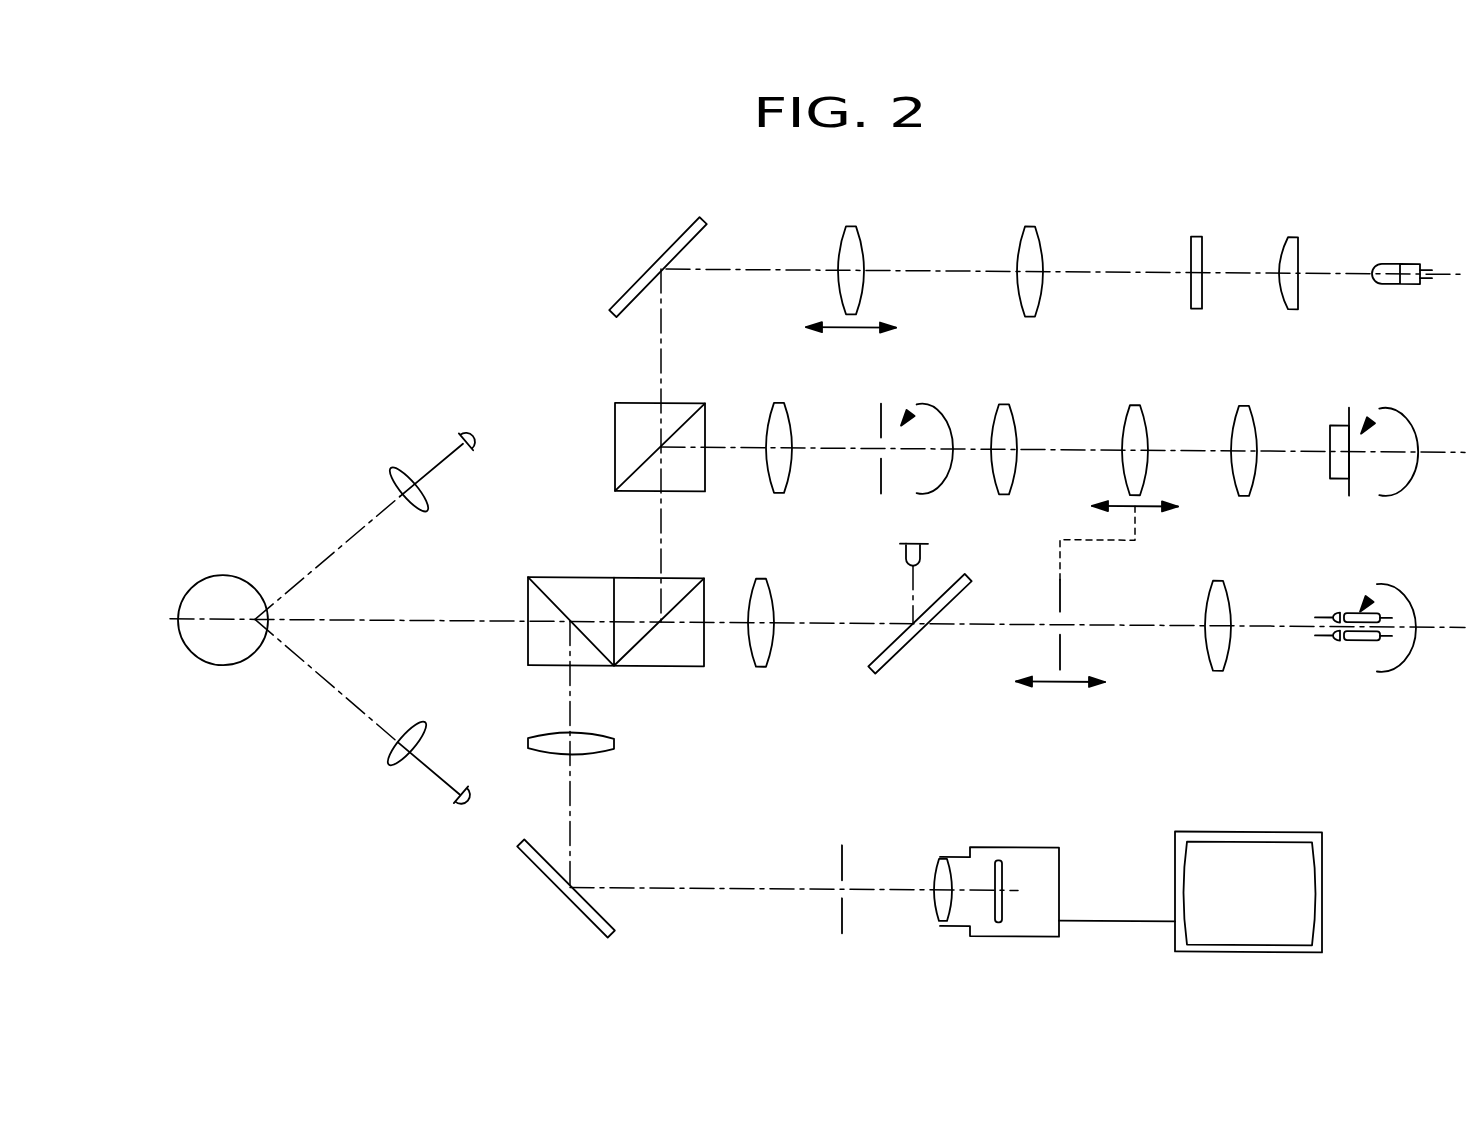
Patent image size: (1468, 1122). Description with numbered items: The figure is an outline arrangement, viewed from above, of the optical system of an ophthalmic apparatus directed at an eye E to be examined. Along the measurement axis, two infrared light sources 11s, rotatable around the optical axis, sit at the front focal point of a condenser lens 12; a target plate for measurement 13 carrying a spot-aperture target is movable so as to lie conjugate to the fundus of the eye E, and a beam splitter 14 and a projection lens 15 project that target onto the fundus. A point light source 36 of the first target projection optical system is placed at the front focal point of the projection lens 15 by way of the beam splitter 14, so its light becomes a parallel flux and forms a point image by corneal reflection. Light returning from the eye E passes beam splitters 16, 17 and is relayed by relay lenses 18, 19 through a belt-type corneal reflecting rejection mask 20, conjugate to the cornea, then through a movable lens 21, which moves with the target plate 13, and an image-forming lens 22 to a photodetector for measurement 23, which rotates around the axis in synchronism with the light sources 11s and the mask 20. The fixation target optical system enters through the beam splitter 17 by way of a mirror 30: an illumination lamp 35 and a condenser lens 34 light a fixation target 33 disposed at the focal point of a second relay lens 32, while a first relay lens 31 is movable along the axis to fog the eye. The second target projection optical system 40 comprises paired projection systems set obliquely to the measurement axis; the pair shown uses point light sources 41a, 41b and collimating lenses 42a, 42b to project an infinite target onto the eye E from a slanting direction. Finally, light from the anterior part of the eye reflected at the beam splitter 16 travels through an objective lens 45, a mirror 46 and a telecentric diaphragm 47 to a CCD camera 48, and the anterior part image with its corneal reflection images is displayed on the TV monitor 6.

The mirror 30 is at (668, 253).
The first relay lens 31 is at (853, 238).
The second relay lens 32 is at (1030, 245).
The fixation target 33 is at (1197, 246).
The condenser lens 34 is at (1288, 247).
The illumination lamp 35 is at (1393, 265).
The beam splitter 17 is at (632, 412).
The relay lens 18 is at (773, 421).
The belt-type corneal reflecting rejection mask 20 is at (880, 418).
The relay lens 19 is at (1005, 419).
The movable lens 21 is at (1137, 420).
The image-forming lens 22 is at (1245, 420).
The photodetector for measurement 23 is at (1335, 428).
The second target projection optical system 40 is at (298, 483).
The point light source 41a is at (463, 436).
The collimating lens 42a is at (398, 474).
The point light source 41b is at (457, 796).
The collimating lens 42b is at (387, 762).
The eye to be examined E is at (221, 590).
The beam splitter 16 is at (562, 578).
The projection lens 15 is at (762, 650).
The point light source 36 is at (903, 550).
The beam splitter 14 is at (910, 644).
The target plate for measurement 13 is at (1062, 655).
The condenser lens 12 is at (1220, 605).
The light sources 11s is at (1355, 646).
The objective lens 45 is at (588, 748).
The mirror 46 is at (553, 880).
The telecentric diaphragm 47 is at (838, 856).
The CCD camera 48 is at (1035, 862).
The TV monitor 6 is at (1288, 845).